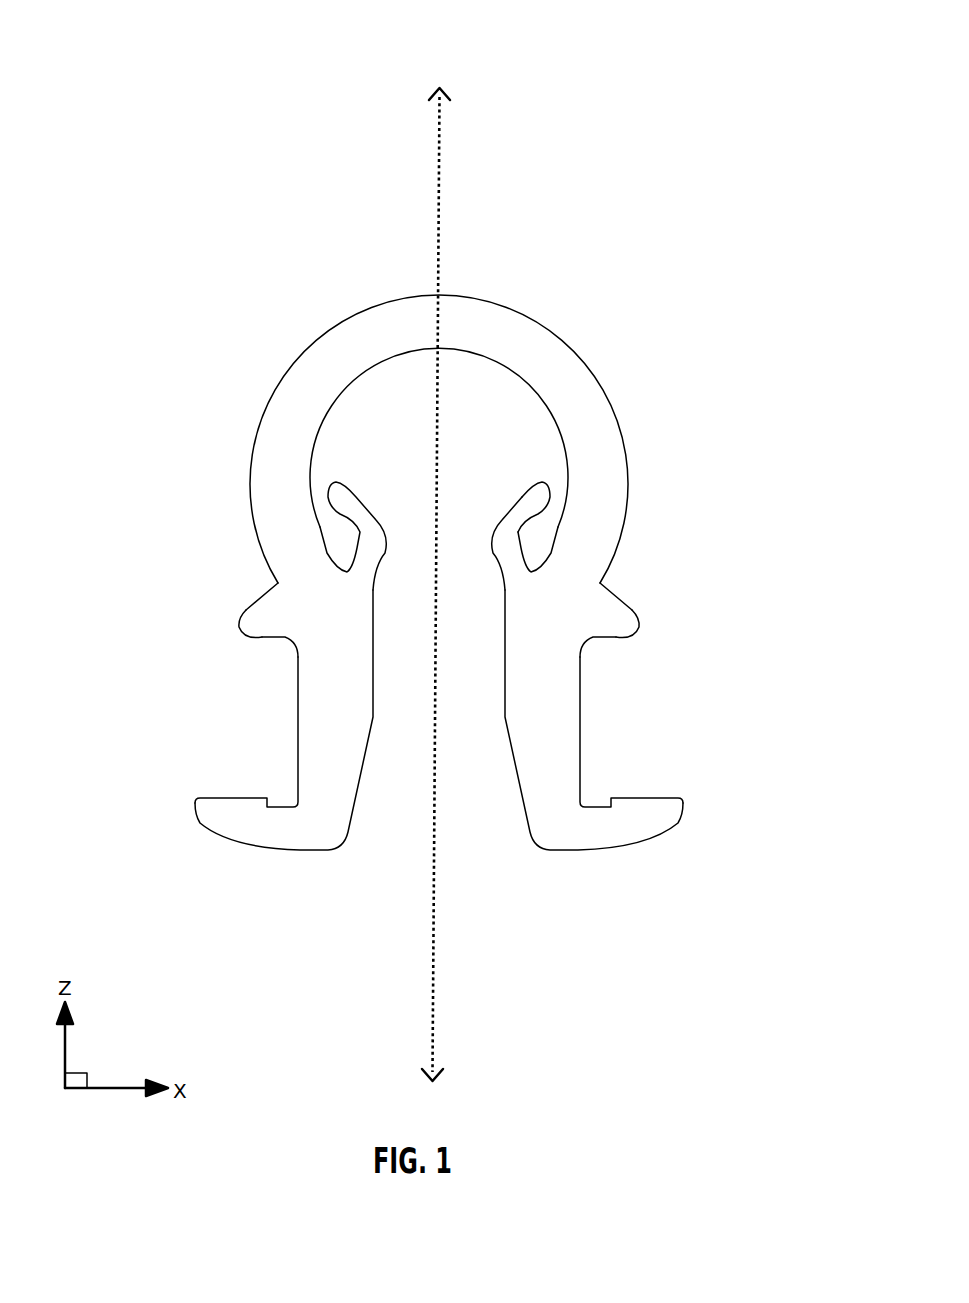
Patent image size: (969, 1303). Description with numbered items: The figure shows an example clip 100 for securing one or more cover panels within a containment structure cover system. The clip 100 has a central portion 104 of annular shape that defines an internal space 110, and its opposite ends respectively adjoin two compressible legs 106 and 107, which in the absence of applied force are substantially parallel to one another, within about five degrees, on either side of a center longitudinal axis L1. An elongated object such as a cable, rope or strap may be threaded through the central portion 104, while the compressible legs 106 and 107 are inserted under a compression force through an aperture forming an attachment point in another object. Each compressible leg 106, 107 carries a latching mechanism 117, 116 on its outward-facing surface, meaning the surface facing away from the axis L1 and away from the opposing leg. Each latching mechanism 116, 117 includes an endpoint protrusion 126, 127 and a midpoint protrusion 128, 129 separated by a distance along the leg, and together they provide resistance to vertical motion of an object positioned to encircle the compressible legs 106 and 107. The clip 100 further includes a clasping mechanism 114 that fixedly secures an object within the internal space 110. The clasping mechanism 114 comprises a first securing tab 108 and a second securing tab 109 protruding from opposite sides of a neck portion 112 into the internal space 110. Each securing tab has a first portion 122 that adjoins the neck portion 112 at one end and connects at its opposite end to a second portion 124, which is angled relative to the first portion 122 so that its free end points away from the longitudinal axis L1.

The clip 100 is at (139, 69).
The center longitudinal axis L1 is at (437, 210).
The central portion 104 is at (318, 375).
The internal space 110 is at (342, 443).
The clasping mechanism 114 is at (487, 498).
The first securing tab 108 is at (342, 528).
The second securing tab 109 is at (540, 531).
The second portion 124 is at (522, 517).
The neck portion 112 is at (216, 576).
The first portion 122 is at (515, 553).
The midpoint protrusion 129 is at (260, 623).
The midpoint protrusion 128 is at (623, 625).
The latching mechanism 117 is at (242, 729).
The latching mechanism 116 is at (685, 739).
The compressible leg 106 is at (318, 720).
The compressible leg 107 is at (553, 720).
The endpoint protrusion 127 is at (232, 812).
The endpoint protrusion 126 is at (648, 813).